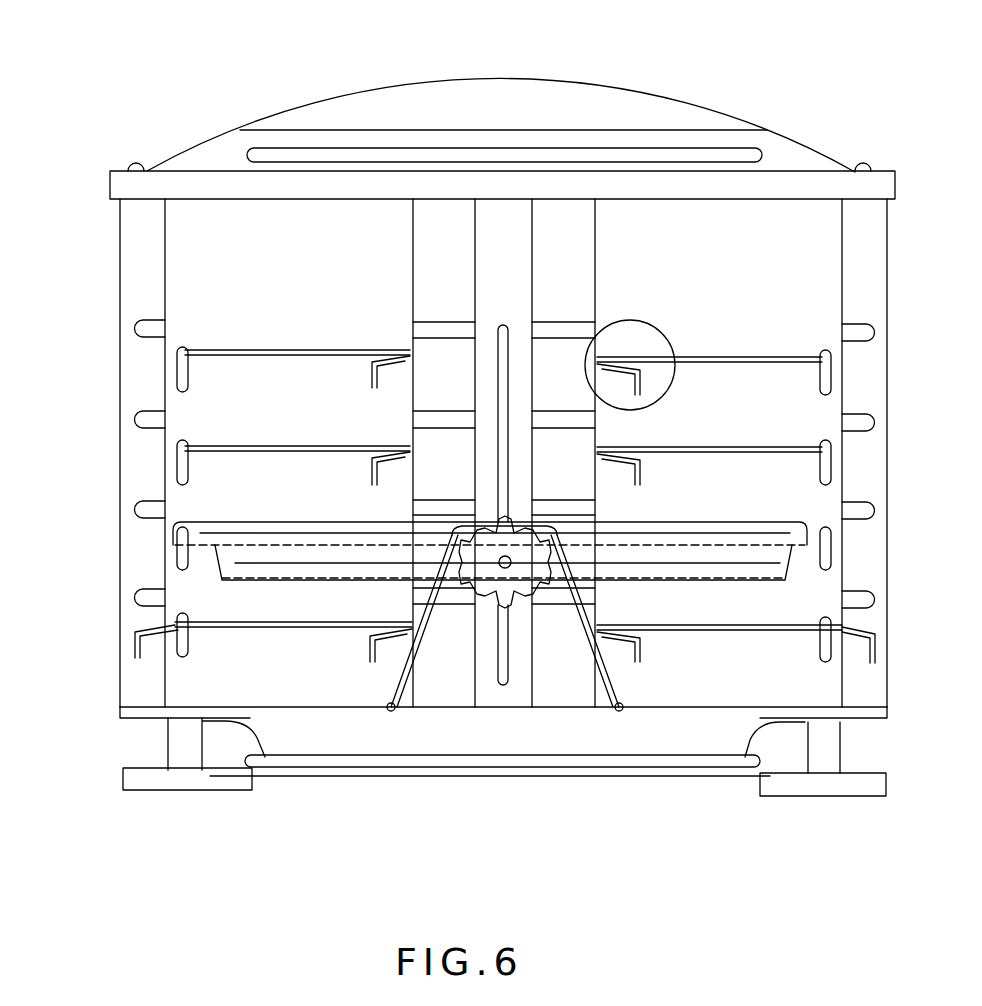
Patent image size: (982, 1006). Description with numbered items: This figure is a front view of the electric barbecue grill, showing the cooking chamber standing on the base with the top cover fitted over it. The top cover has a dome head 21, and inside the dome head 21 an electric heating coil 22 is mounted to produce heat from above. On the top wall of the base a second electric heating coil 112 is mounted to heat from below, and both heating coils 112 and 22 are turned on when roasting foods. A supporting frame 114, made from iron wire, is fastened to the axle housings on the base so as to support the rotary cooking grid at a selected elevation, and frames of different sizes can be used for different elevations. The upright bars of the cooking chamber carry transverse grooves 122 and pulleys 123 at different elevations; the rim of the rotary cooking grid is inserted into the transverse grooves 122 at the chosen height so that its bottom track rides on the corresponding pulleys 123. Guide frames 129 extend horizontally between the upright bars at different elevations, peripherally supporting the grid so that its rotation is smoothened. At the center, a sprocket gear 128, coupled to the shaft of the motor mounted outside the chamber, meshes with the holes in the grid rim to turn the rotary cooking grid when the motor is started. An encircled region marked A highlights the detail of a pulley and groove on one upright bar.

The dome head 21 is at (425, 103).
The electric heating coil 22 is at (306, 150).
The transverse grooves 122 is at (150, 418).
The pulleys 123 is at (186, 447).
The guide frames 129 is at (290, 350).
The sprocket gear 128 is at (493, 520).
The electric heating coil 112 is at (322, 762).
The supporting frames 114 is at (393, 682).
The detail area A is at (665, 337).